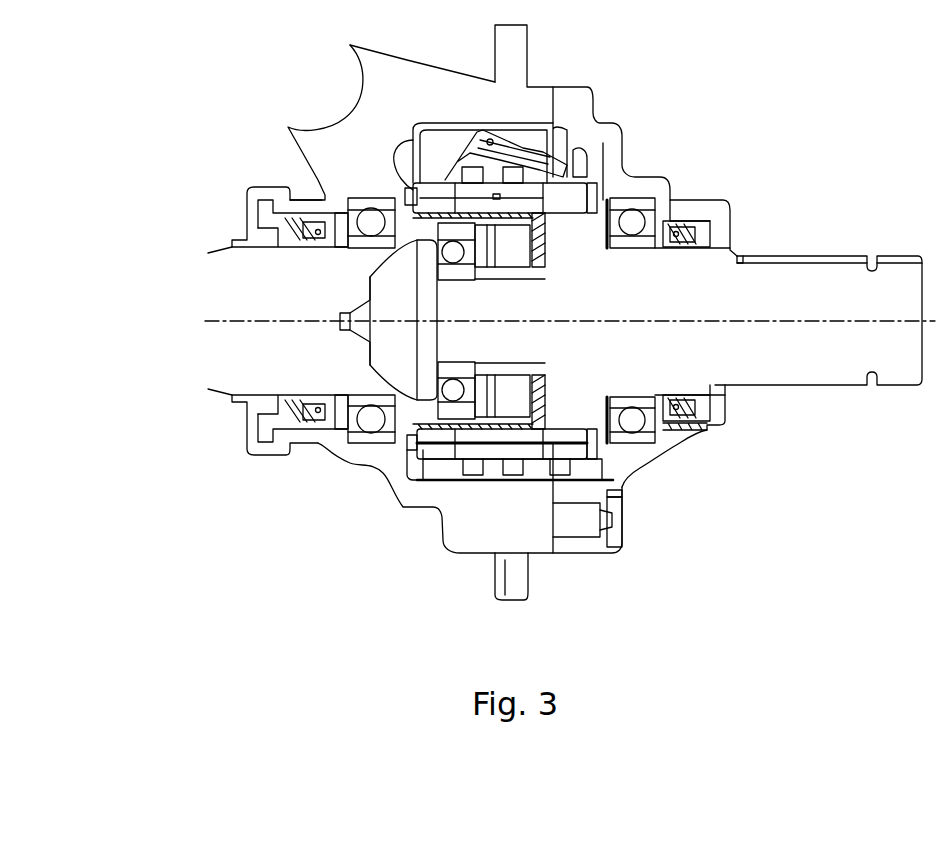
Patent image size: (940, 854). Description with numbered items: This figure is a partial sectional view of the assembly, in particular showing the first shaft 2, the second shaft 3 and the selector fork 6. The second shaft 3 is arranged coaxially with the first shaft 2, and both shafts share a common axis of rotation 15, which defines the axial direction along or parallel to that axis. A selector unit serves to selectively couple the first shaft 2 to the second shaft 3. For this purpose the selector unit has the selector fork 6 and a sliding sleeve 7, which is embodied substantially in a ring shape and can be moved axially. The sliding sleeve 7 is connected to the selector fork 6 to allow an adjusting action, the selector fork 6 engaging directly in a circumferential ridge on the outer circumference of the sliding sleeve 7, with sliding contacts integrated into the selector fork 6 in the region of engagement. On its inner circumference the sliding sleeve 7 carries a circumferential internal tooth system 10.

The first shaft 2 is at (265, 350).
The second shaft 3 is at (882, 283).
The selector fork 6 is at (560, 155).
The sliding sleeve 7 is at (558, 190).
The internal tooth system 10 is at (430, 458).
The axis of rotation 15 is at (757, 318).